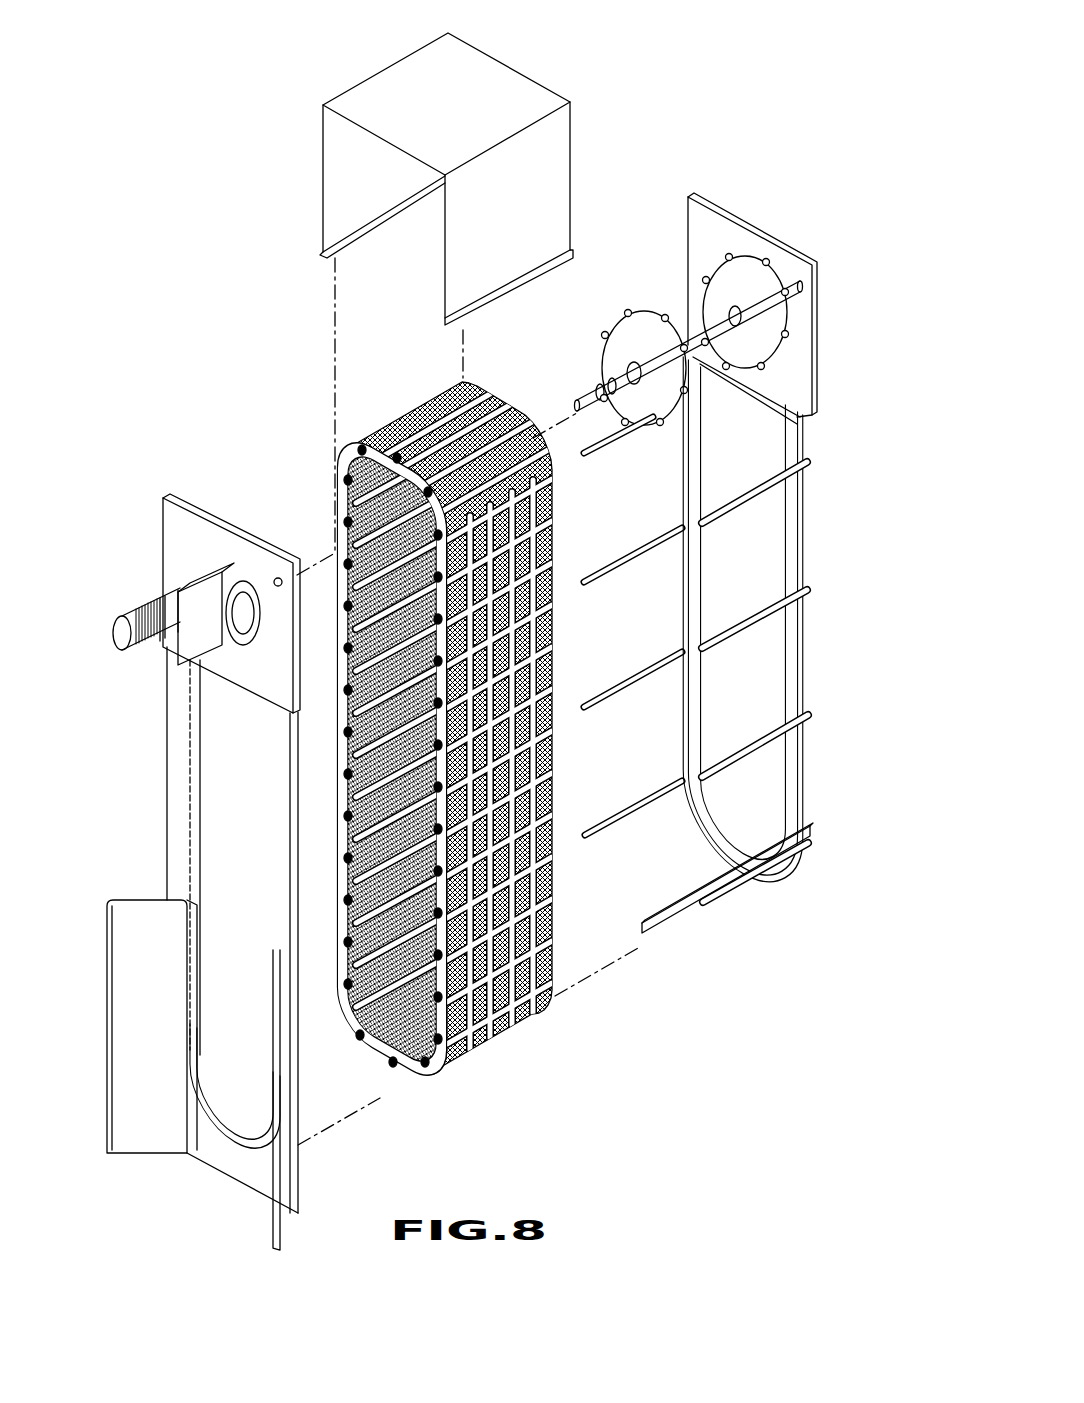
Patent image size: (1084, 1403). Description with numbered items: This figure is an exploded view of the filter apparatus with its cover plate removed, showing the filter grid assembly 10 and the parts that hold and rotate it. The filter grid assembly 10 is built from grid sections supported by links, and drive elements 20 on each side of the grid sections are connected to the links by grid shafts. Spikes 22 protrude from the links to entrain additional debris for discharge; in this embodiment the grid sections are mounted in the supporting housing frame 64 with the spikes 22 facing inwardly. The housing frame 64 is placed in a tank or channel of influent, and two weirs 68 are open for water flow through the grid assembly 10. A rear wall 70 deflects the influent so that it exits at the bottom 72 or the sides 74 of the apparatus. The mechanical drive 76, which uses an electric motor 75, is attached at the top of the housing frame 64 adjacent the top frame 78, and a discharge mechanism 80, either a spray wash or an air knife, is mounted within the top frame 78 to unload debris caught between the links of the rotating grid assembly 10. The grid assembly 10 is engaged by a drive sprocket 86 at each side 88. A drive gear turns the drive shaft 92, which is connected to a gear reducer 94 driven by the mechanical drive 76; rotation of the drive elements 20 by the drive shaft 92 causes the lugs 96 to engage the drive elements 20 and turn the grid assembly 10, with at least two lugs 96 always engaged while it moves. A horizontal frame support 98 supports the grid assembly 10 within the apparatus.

The filter grid assembly 10 is at (434, 761).
The drive elements 20 is at (434, 736).
The spikes 22 is at (410, 1058).
The supporting housing frame 64 is at (180, 841).
The weirs 68 is at (277, 1227).
The rear wall 70 is at (744, 627).
The bottom 72 is at (692, 933).
The sides 74 is at (530, 880).
The electric motor 75 is at (110, 625).
The mechanical drive 76 is at (161, 564).
The top frame 78 is at (525, 97).
The discharge mechanism 80 is at (792, 310).
The drive sprocket 86 is at (650, 430).
The side 88 is at (565, 498).
The drive shaft 92 is at (750, 304).
The gear reducer 94 is at (195, 582).
The lugs 96 is at (713, 257).
The horizontal frame support 98 is at (757, 618).